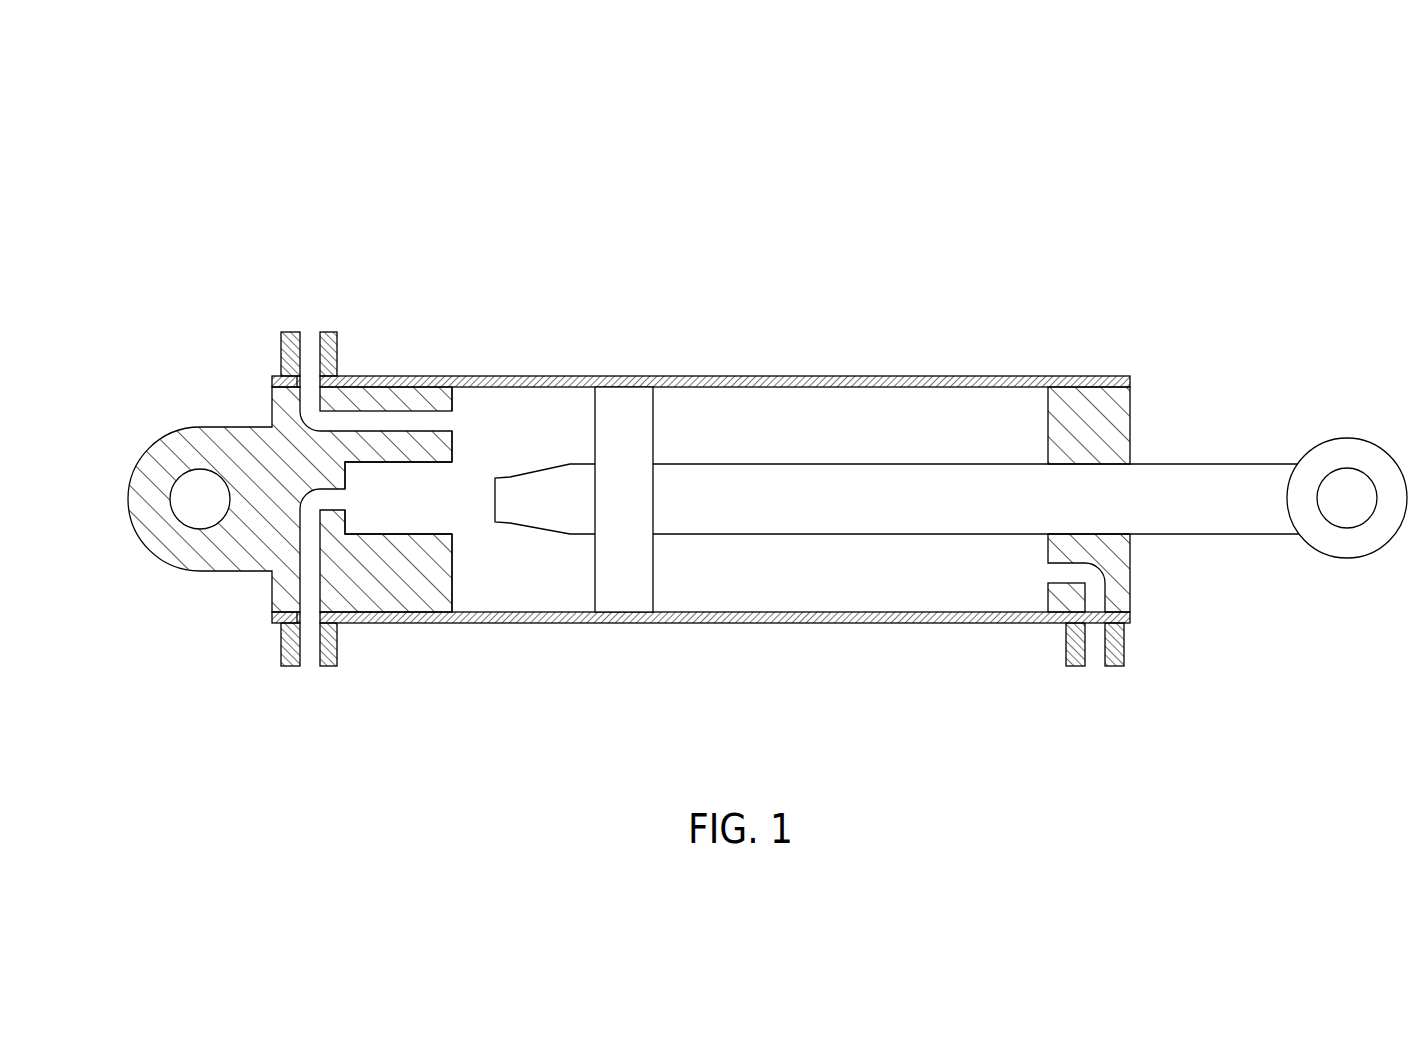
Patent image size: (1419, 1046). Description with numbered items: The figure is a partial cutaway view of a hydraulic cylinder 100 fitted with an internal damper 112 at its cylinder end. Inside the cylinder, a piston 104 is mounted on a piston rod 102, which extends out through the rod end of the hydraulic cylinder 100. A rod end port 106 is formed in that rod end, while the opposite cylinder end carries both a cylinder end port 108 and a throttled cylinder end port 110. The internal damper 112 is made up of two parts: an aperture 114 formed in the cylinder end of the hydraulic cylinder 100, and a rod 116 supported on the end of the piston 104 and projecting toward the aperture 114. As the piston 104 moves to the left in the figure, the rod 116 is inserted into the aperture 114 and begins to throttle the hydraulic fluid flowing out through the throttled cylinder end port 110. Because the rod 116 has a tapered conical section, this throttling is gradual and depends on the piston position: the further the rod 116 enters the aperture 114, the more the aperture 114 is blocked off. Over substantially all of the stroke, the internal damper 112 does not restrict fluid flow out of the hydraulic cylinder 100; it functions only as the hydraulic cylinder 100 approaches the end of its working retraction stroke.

The hydraulic cylinder 100 is at (767, 427).
The piston rod 102 is at (898, 463).
The piston 104 is at (653, 412).
The rod end port 106 is at (1092, 675).
The cylinder end port 108 is at (307, 317).
The throttled cylinder end port 110 is at (303, 675).
The internal damper 112 is at (500, 427).
The aperture 114 is at (450, 503).
The rod 116 is at (547, 463).